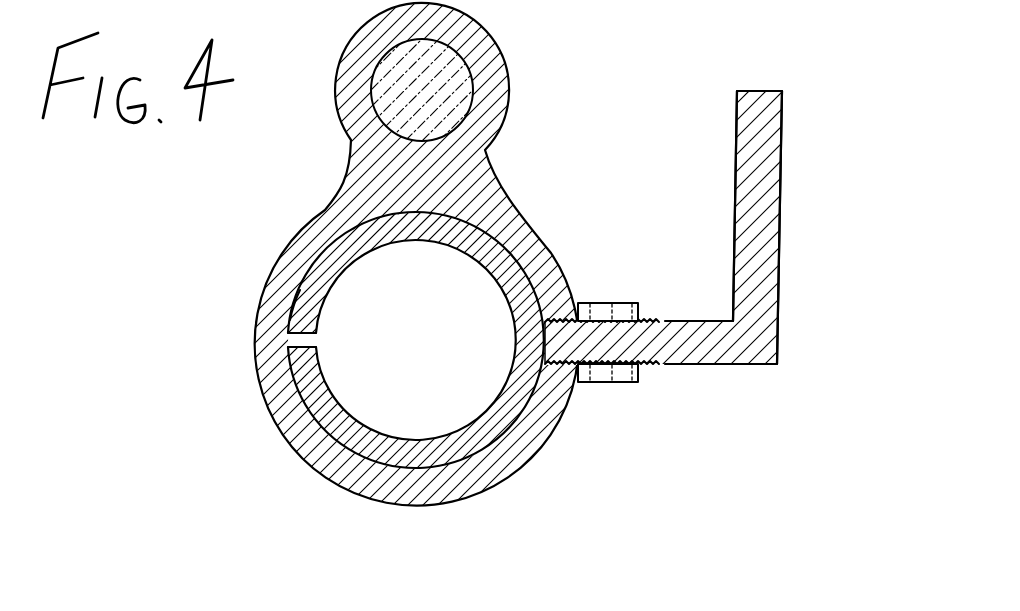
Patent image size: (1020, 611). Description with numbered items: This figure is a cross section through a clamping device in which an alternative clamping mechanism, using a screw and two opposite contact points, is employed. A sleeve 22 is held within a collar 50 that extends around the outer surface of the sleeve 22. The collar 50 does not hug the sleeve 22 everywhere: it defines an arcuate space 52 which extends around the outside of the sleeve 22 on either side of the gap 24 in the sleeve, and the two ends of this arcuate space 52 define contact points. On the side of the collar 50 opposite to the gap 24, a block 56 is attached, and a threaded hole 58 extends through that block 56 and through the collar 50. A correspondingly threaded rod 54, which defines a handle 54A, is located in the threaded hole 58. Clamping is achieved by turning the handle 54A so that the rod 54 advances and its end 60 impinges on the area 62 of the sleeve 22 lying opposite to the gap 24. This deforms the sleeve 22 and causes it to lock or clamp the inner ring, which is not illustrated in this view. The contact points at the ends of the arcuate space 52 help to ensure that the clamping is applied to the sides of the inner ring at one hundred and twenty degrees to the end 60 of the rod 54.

The sleeve 22 is at (367, 470).
The gap 24 is at (305, 340).
The collar 50 is at (467, 480).
The arcuate space 52 is at (285, 322).
The threaded rod 54 is at (721, 267).
The handle 54A is at (765, 178).
The block 56 is at (617, 303).
The threaded hole 58 is at (652, 318).
The end of the rod 60 is at (575, 382).
The area of the sleeve 62 is at (547, 343).